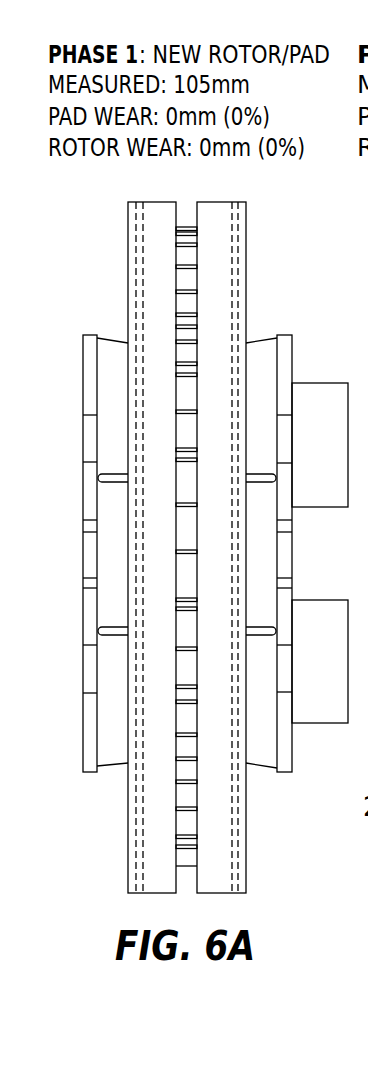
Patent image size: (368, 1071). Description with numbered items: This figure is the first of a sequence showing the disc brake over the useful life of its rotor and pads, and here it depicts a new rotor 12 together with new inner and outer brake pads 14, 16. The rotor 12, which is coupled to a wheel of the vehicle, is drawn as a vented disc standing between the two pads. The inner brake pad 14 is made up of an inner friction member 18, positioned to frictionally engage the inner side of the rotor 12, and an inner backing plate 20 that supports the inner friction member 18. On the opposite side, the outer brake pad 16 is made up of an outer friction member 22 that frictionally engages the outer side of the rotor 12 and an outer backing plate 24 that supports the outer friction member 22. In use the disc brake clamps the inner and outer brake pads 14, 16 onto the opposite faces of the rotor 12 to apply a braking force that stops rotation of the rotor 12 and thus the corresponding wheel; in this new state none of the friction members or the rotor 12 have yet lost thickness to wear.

The rotor 12 is at (218, 185).
The inner brake pad 14 is at (297, 552).
The outer brake pad 16 is at (85, 554).
The inner friction member 18 is at (262, 753).
The inner backing plate 20 is at (283, 773).
The outer friction member 22 is at (112, 753).
The outer backing plate 24 is at (90, 773).